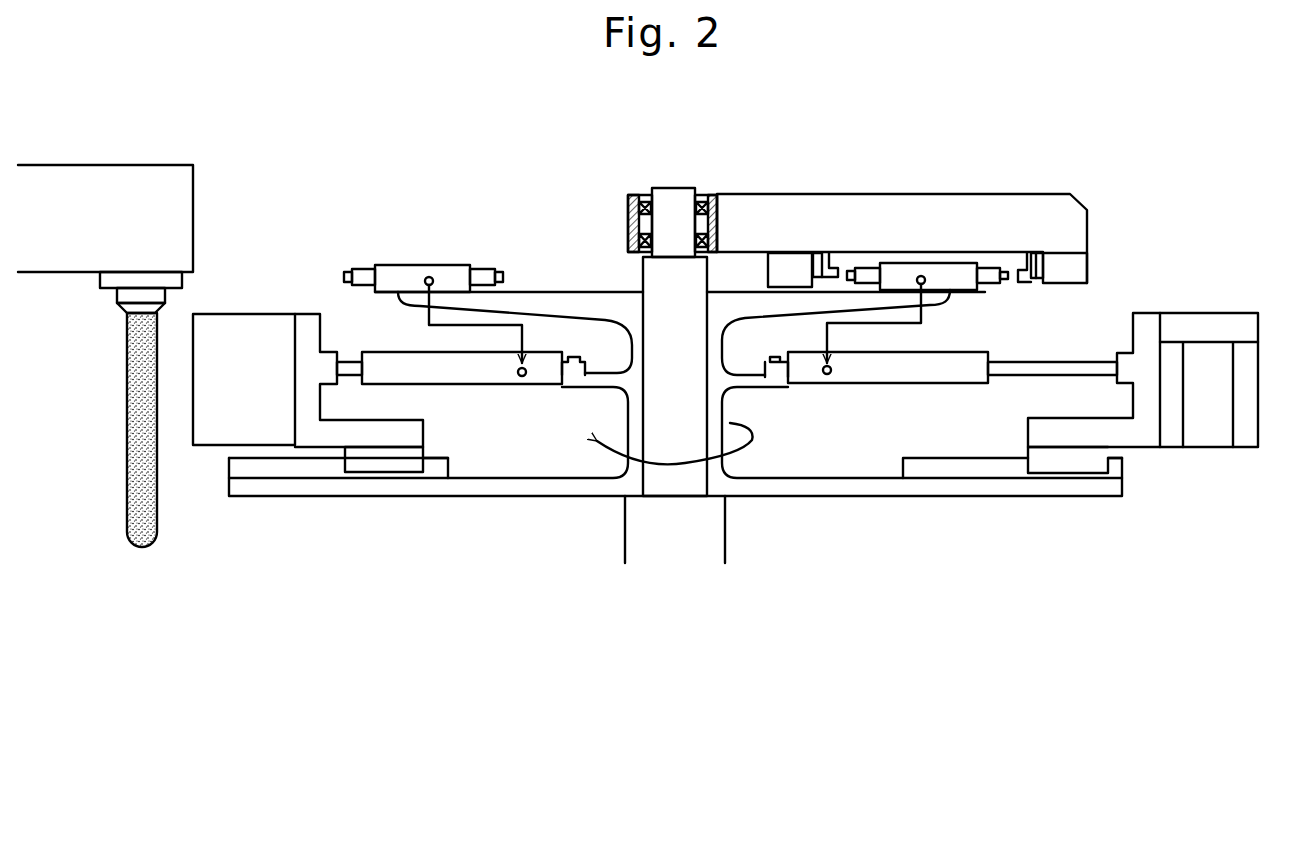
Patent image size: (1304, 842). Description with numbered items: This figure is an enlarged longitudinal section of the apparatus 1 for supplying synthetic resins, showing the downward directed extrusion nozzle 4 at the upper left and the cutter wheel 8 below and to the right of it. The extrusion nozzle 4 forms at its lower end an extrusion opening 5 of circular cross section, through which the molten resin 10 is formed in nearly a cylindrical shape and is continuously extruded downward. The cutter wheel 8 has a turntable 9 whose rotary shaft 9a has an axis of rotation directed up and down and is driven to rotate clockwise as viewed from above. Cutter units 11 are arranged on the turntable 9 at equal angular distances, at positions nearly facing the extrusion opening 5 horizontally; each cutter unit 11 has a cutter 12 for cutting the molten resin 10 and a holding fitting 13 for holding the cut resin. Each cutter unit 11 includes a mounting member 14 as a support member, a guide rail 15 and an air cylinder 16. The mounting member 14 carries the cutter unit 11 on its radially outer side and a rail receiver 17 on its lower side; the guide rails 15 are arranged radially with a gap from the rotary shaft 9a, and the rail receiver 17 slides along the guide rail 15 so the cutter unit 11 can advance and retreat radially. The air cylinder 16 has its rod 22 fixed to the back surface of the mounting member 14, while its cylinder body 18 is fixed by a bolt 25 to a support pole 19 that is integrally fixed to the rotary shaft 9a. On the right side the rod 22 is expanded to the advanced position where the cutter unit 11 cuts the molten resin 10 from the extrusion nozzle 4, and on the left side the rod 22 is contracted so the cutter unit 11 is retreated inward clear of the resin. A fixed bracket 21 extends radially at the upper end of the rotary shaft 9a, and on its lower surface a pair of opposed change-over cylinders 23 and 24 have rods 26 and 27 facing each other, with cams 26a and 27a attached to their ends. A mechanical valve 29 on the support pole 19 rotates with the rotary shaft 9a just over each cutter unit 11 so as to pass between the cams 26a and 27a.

The apparatus for supplying synthetic resins 1 is at (392, 153).
The extrusion nozzle 4 is at (168, 296).
The extrusion opening 5 is at (124, 312).
The cutter wheel 8 is at (813, 126).
The turntable 9 is at (825, 497).
The rotary shaft 9a is at (652, 270).
The molten resin 10 is at (128, 432).
The cutter unit 11 is at (216, 449).
The cutter 12 is at (255, 316).
The holding fitting 13 is at (193, 430).
The mounting member 14 is at (306, 316).
The guide rail 15 is at (290, 480).
The air cylinder 16 is at (506, 389).
The rail receiver 17 is at (388, 476).
The cylinder body 18 is at (465, 376).
The support pole 19 is at (632, 338).
The fixed bracket 21 is at (986, 194).
The rod 22 is at (350, 362).
The change-over cylinder 23 is at (1063, 268).
The change-over cylinder 24 is at (786, 253).
The bolt 25 is at (778, 360).
The rod 26 is at (1036, 280).
The cam 26a is at (1020, 282).
The rod 27 is at (817, 253).
The cam 27a is at (830, 255).
The mechanical valve 29 is at (395, 265).